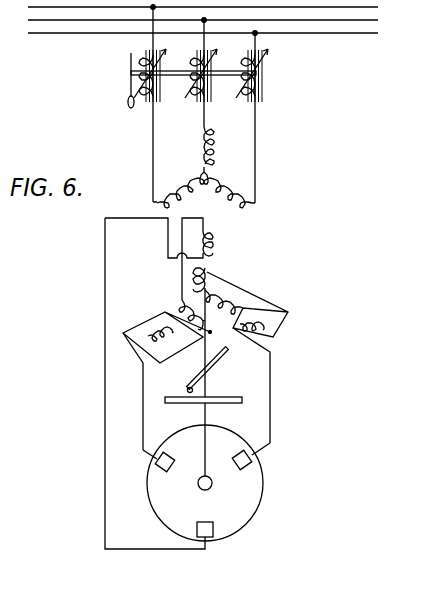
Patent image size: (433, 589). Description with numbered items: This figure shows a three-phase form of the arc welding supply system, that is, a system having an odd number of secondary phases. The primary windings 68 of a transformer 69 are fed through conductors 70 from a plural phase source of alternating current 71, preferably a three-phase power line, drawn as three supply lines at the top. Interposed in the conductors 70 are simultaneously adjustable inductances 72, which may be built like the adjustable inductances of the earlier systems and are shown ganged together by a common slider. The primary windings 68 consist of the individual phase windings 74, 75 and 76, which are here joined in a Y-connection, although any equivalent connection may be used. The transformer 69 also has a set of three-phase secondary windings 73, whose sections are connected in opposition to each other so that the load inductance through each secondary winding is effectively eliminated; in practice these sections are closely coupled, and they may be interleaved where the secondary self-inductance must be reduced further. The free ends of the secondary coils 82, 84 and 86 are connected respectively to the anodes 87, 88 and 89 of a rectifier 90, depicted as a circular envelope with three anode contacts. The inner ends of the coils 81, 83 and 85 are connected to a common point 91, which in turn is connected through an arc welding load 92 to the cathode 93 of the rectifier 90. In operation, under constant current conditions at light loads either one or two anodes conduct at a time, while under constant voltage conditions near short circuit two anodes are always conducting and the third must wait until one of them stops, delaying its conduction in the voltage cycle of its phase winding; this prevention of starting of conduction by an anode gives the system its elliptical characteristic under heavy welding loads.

The primary windings 68 is at (226, 167).
The transformer 69 is at (182, 403).
The conductors 70 is at (272, 113).
The plural phase source of alternating current 71 is at (349, 10).
The simultaneously adjustable inductances 72 is at (270, 69).
The three-phase secondary windings 73 is at (221, 389).
The phase winding 74 is at (200, 150).
The phase winding 75 is at (245, 188).
The phase winding 76 is at (184, 183).
The secondary coil 81 is at (182, 300).
The secondary coil 82 is at (168, 331).
The secondary coil 83 is at (213, 279).
The secondary coil 84 is at (213, 243).
The secondary coil 85 is at (216, 322).
The secondary coil 86 is at (258, 318).
The anode 87 is at (157, 471).
The anode 88 is at (255, 456).
The anode 89 is at (213, 527).
The rectifier 90 is at (258, 508).
The common point 91 is at (227, 279).
The arc welding load 92 is at (218, 371).
The cathode 93 is at (213, 486).